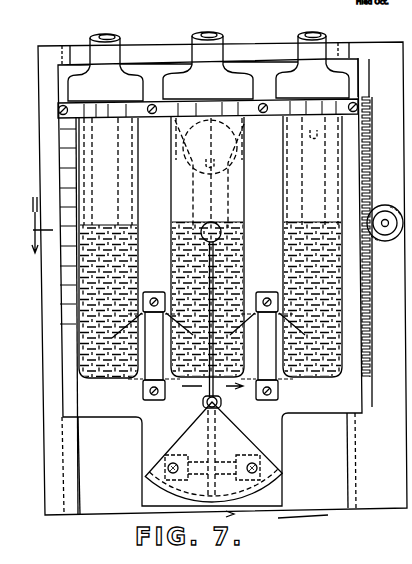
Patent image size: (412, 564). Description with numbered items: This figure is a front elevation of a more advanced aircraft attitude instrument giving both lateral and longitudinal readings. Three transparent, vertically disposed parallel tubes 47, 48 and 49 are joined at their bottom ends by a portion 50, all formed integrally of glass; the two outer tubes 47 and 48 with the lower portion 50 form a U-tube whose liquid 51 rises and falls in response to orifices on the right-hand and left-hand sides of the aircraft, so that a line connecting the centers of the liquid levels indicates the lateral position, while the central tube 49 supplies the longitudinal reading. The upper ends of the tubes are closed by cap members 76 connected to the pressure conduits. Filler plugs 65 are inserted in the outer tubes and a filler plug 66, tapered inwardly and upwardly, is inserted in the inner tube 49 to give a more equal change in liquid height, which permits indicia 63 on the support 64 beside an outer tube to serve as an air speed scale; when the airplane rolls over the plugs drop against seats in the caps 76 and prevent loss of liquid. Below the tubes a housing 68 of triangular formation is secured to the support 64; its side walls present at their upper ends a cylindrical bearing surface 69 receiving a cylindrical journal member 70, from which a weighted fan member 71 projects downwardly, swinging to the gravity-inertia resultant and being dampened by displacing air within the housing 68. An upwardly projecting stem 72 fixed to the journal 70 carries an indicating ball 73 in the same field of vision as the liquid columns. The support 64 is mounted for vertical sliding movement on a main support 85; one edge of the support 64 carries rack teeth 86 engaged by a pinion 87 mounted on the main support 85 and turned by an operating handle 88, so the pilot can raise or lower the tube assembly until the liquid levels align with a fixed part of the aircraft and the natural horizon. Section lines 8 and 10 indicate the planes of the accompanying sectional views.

The section line 8- 8 is at (42, 231).
The section line 10- 10 is at (264, 457).
The outer tube 47 is at (138, 177).
The outer tube 48 is at (245, 150).
The central tube 49 is at (247, 197).
The connecting portion 50 is at (128, 381).
The liquid 51 is at (122, 222).
The indicia 63 is at (63, 307).
The support 64 is at (353, 400).
The filler plug 65 is at (137, 146).
The filler plug 66 is at (228, 181).
The housing 68 is at (178, 426).
The bearing surface 69 is at (206, 403).
The journal member 70 is at (221, 403).
The fan member 71 is at (212, 446).
The pin or stem 72 is at (236, 254).
The indicating ball 73 is at (212, 222).
The cap member 76 is at (110, 58).
The main support 85 is at (373, 500).
The rack teeth 86 is at (374, 357).
The pinion 87 is at (382, 246).
The operating handle 88 is at (386, 205).